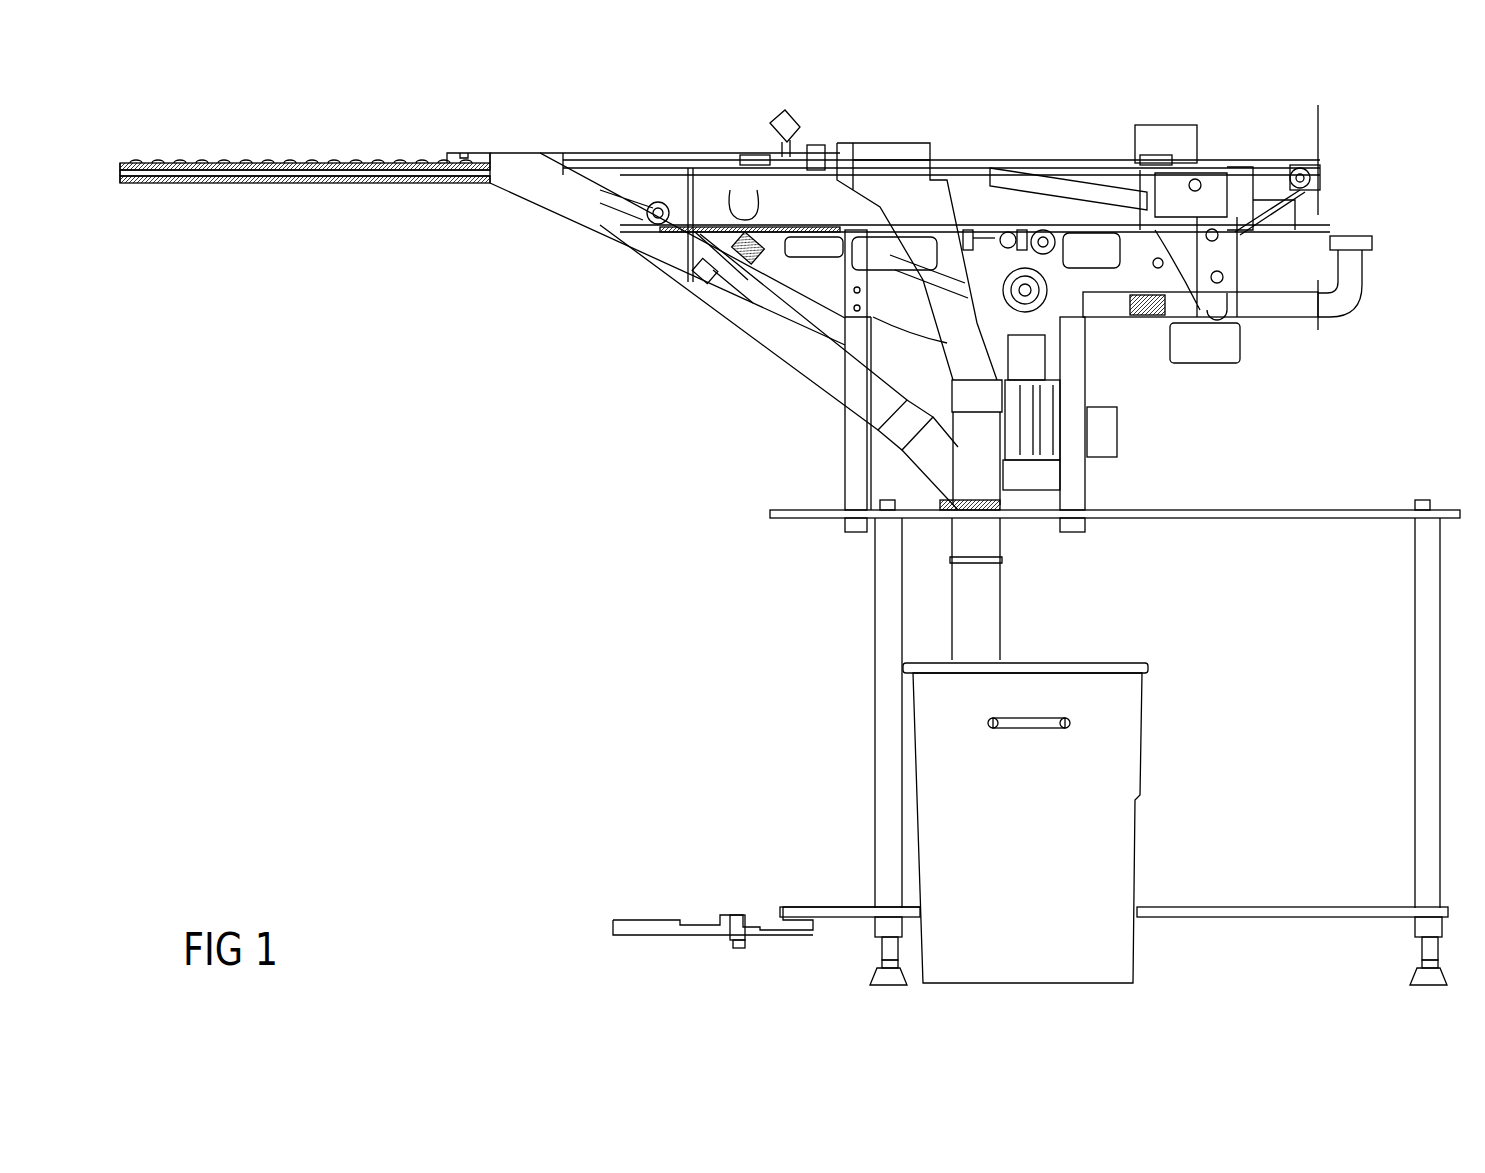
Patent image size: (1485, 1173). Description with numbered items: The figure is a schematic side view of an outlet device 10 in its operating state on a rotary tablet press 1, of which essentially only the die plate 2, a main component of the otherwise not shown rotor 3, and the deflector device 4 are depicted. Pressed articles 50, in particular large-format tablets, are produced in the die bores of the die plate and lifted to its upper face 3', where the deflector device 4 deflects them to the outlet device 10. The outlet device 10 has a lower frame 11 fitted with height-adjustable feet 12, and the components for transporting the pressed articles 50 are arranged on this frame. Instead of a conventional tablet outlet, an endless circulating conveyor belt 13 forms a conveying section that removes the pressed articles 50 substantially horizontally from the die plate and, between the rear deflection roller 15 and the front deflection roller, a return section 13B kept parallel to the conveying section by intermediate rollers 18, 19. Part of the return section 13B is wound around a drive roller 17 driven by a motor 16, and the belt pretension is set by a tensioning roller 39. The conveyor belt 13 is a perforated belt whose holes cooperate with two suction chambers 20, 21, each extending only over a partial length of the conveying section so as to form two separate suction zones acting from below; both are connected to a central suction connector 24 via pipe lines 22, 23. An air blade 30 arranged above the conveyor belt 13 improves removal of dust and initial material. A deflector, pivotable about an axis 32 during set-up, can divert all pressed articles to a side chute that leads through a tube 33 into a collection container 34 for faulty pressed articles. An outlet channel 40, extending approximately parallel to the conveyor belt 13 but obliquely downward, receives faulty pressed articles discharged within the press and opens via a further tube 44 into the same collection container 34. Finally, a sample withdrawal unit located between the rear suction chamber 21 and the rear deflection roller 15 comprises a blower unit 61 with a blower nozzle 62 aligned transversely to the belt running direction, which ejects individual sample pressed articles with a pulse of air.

The rotary tablet press 1 is at (288, 469).
The die plate 2 is at (230, 225).
The rotor 3 is at (305, 264).
The upper face of the die plate 3' is at (167, 131).
The deflector device 4 is at (475, 148).
The outlet device 10 is at (588, 547).
The lower frame 11 is at (830, 650).
The height-adjustable feet 12 is at (870, 945).
The conveyor belt 13 is at (626, 878).
The return section 13B is at (683, 230).
The rear deflection roller 15 is at (1315, 178).
The motor 16 is at (1047, 430).
The drive roller 17 is at (1025, 293).
The intermediate roller 18 is at (655, 220).
The intermediate roller 19 is at (1262, 216).
The suction chamber 20 is at (718, 183).
The suction chamber 21 is at (1105, 183).
The pipe line 22 is at (773, 267).
The pipe line 23 is at (1103, 248).
The central suction connector 24 is at (1350, 240).
The air blade 30 is at (750, 117).
The axis 32 is at (880, 158).
The tube 33 is at (983, 460).
The collection container 34 is at (1105, 840).
The tensioning roller 39 is at (1003, 240).
The outlet channel 40 is at (545, 185).
The further tube 44 is at (797, 345).
The pressed articles 50 is at (310, 160).
The blower unit 61 is at (1185, 140).
The blower nozzle 62 is at (1150, 157).